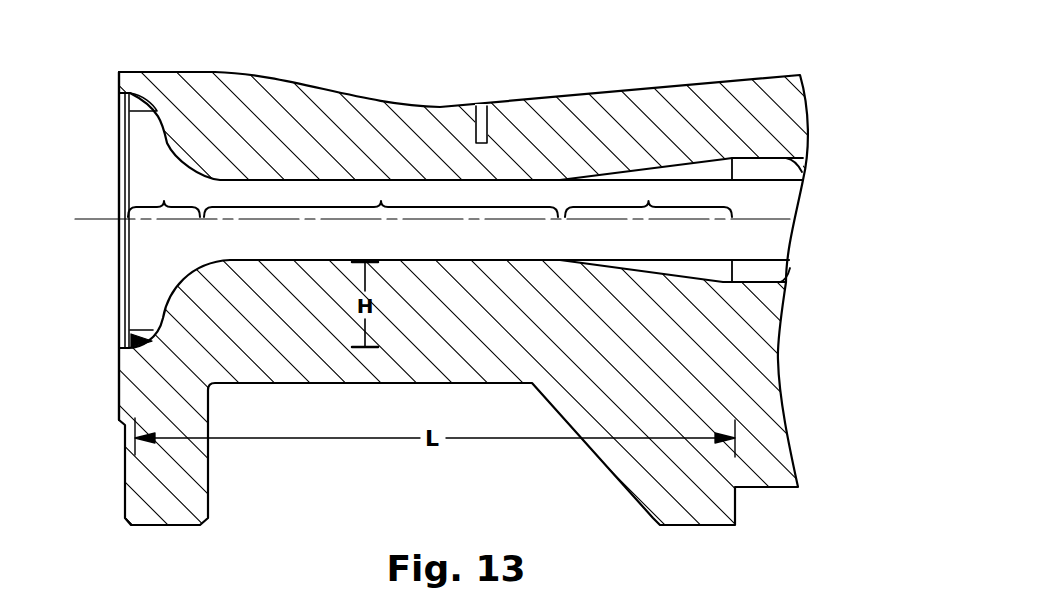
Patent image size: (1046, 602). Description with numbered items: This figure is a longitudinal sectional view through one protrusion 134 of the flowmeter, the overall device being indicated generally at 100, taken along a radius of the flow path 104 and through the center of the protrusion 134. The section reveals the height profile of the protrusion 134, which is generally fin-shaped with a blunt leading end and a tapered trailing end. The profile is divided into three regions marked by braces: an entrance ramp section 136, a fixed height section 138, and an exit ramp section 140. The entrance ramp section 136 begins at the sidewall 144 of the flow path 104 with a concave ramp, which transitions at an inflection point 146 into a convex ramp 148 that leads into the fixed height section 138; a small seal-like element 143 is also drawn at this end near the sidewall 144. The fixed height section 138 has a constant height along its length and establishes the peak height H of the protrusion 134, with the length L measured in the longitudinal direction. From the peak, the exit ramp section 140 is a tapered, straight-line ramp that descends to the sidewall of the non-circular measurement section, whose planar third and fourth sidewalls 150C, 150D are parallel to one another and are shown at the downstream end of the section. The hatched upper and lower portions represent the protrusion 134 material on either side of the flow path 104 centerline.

The housing assembly 100 is at (657, 62).
The flow path 104 is at (262, 249).
The protrusion 134 is at (236, 143).
The entrance ramp section 136 is at (164, 196).
The fixed height section 138 is at (381, 201).
The exit ramp section 140 is at (648, 201).
The seal element 143 is at (130, 336).
The sidewall 144 is at (119, 362).
The inflection point 146 is at (162, 296).
The convex ramp 148 is at (182, 275).
The third sidewall 150C is at (803, 173).
The fourth sidewall 150D is at (784, 268).